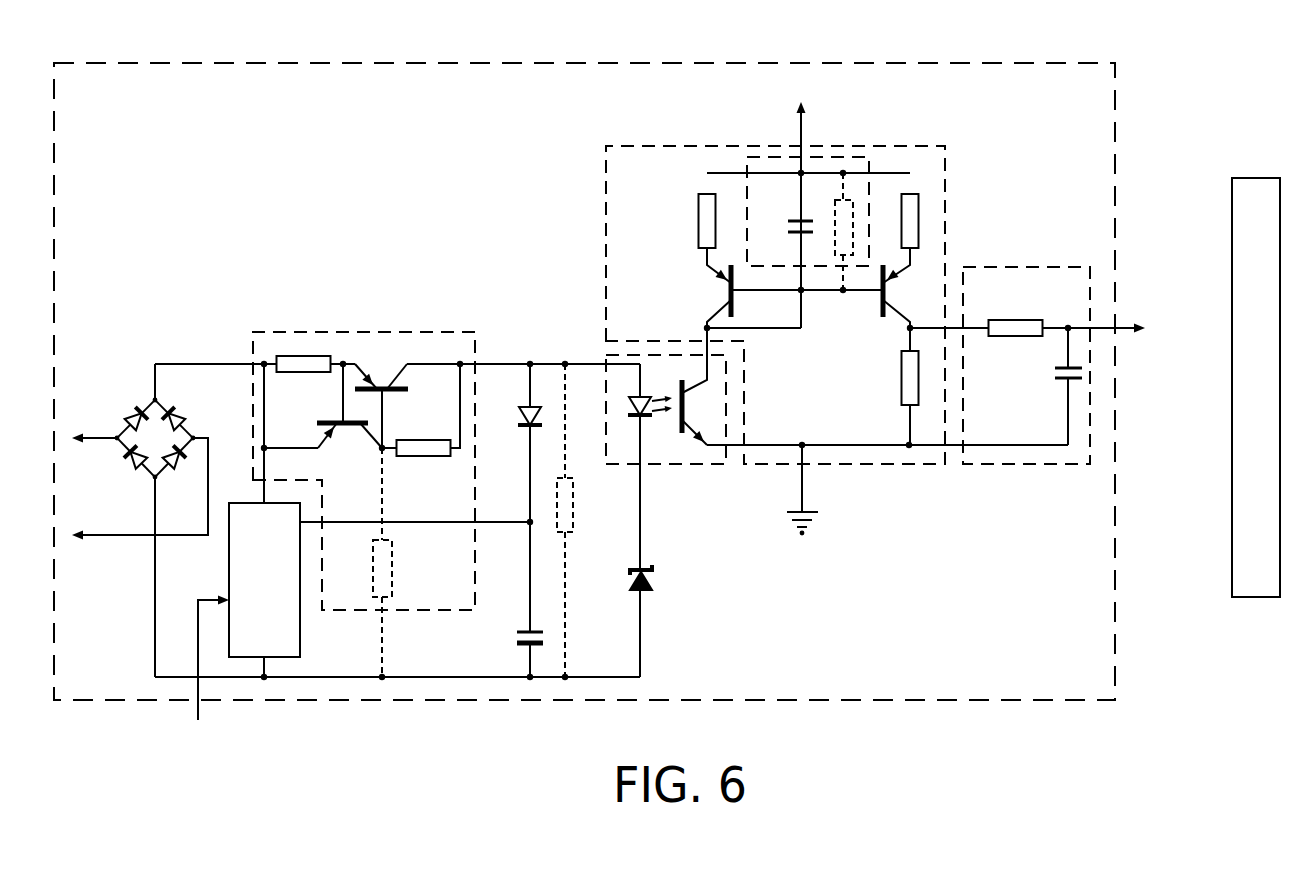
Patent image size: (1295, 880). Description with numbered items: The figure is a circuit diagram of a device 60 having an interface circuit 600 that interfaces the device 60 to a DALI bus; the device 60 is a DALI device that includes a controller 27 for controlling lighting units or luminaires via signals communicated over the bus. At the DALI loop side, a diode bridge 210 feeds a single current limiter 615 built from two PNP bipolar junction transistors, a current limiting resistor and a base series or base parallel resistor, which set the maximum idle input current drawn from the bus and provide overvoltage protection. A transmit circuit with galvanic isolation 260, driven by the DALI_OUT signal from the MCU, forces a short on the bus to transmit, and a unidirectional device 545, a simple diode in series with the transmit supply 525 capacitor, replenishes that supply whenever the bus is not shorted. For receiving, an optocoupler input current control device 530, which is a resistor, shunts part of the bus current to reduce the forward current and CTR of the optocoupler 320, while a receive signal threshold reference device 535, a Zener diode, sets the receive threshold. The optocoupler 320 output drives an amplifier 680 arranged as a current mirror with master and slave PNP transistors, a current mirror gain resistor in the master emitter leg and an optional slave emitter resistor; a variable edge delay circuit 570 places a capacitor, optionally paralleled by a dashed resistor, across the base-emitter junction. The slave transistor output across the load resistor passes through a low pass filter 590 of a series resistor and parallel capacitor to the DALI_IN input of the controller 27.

The device 60 is at (1199, 730).
The interface circuit 600 is at (590, 63).
The controller 27 is at (1255, 178).
The diode bridge 210 is at (112, 390).
The transmit circuit with galvanic isolation 260 is at (300, 631).
The current limiter 615 is at (300, 332).
The unidirectional device 545 is at (533, 416).
The transmit supply 525 is at (545, 637).
The optocoupler input current control device 530 is at (576, 518).
The receive signal threshold reference device 535 is at (657, 582).
The optocoupler 320 is at (705, 468).
The amplifier 680 is at (606, 188).
The variable edge delay circuit 570 is at (858, 157).
The low pass filter 590 is at (1025, 267).